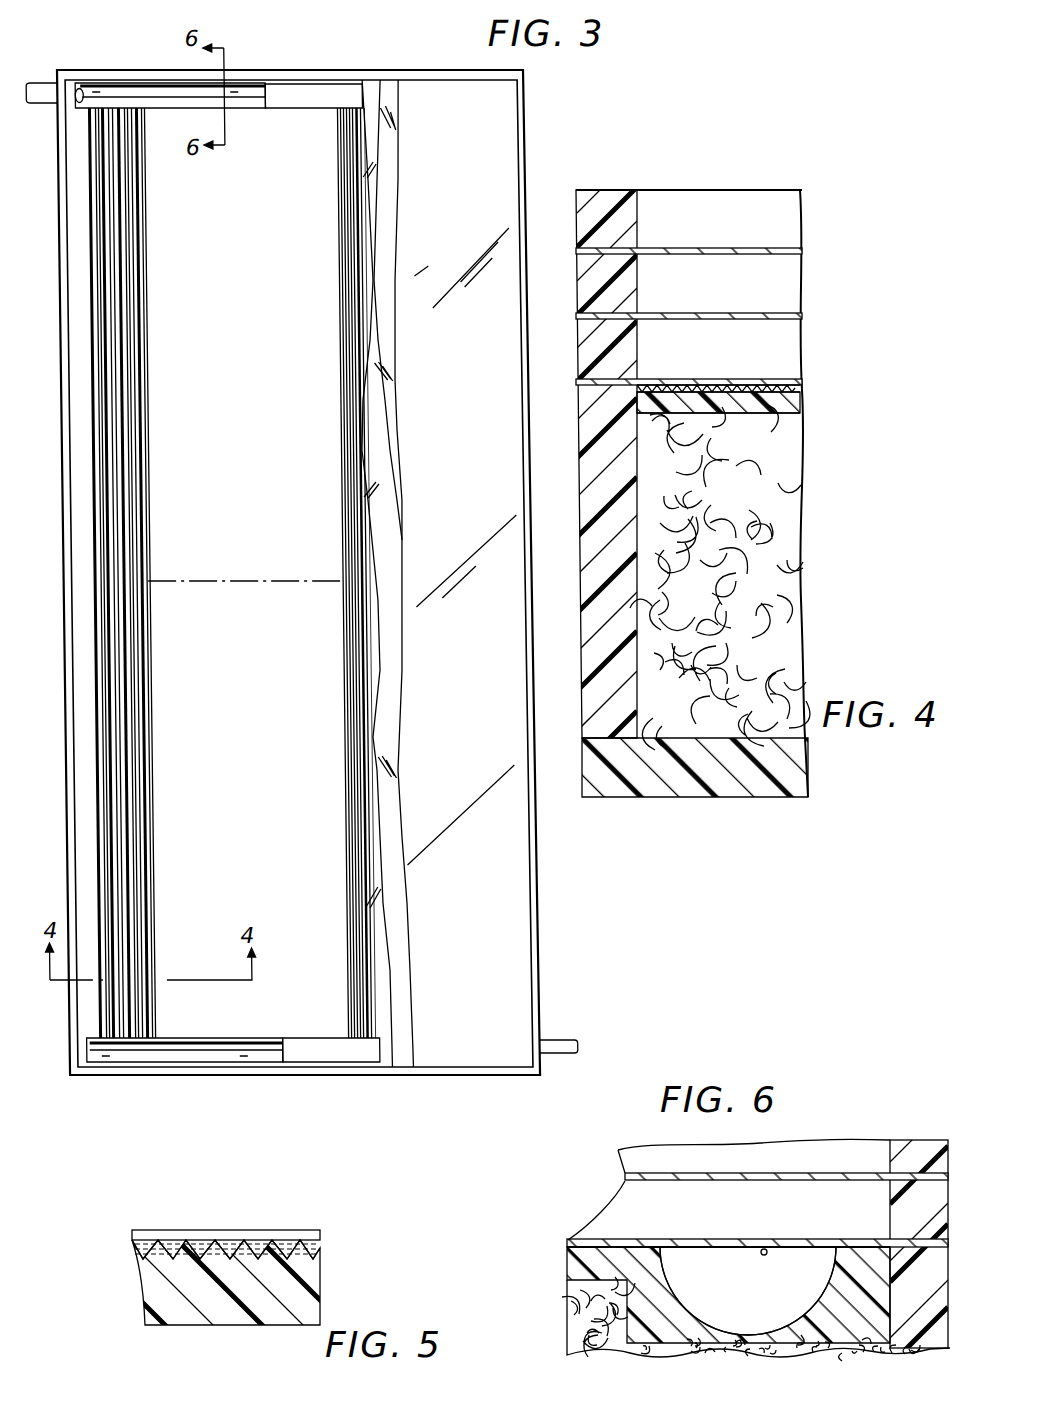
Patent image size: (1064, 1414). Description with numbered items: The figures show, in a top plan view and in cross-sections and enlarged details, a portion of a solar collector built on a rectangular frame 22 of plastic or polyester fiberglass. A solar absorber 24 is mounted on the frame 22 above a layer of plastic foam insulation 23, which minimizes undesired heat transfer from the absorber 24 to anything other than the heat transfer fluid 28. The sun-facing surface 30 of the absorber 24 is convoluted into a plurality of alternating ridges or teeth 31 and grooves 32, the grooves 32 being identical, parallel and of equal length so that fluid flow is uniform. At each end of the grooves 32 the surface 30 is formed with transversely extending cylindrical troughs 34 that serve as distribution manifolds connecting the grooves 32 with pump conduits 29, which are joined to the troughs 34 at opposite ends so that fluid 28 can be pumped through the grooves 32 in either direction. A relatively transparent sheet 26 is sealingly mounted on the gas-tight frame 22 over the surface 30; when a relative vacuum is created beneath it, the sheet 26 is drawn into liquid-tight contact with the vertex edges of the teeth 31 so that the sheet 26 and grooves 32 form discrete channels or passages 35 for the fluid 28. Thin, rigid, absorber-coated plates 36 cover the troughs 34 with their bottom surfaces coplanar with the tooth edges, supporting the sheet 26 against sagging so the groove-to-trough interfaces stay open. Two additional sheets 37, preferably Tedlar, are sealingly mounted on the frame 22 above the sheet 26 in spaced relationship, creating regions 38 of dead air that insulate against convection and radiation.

In FIG. 3, the frame 22 is at (524, 346).
In FIG. 4, the frame 22 is at (750, 798).
In FIG. 6, the frame 22 is at (918, 1142).
In FIG. 4, the insulation 23 is at (790, 528).
In FIG. 6, the insulation 23 is at (580, 1318).
In FIG. 4, the solar absorber 24 is at (800, 407).
In FIG. 5, the solar absorber 24 is at (310, 1312).
In FIG. 6, the solar absorber 24 is at (570, 1262).
In FIG. 3, the transparent sheet 26 is at (373, 448).
In FIG. 4, the transparent sheet 26 is at (800, 373).
In FIG. 5, the transparent sheet 26 is at (321, 1231).
In FIG. 6, the transparent sheet 26 is at (620, 1238).
In FIG. 5, the heat transfer fluid 28 is at (258, 1240).
In FIG. 3, the conduits 29 is at (47, 84).
In FIG. 3, the absorber surface 30 is at (198, 573).
In FIG. 3, the ridges or teeth 31 is at (100, 505).
In FIG. 4, the ridges or teeth 31 is at (665, 385).
In FIG. 3, the grooves 32 is at (130, 500).
In FIG. 4, the grooves 32 is at (688, 383).
In FIG. 3, the troughs 34 is at (215, 1048).
In FIG. 6, the troughs 34 is at (765, 1295).
In FIG. 3, the channels or passages 35 is at (133, 517).
In FIG. 4, the channels or passages 35 is at (748, 382).
In FIG. 5, the channels or passages 35 is at (198, 1238).
In FIG. 3, the rigid plates 36 is at (310, 97).
In FIG. 6, the rigid plates 36 is at (764, 1247).
In FIG. 3, the additional sheets 37 is at (461, 404).
In FIG. 4, the additional sheets 37 is at (747, 247).
In FIG. 6, the additional sheets 37 is at (856, 1173).
In FIG. 4, the dead air regions 38 is at (655, 343).
In FIG. 6, the dead air regions 38 is at (833, 1217).